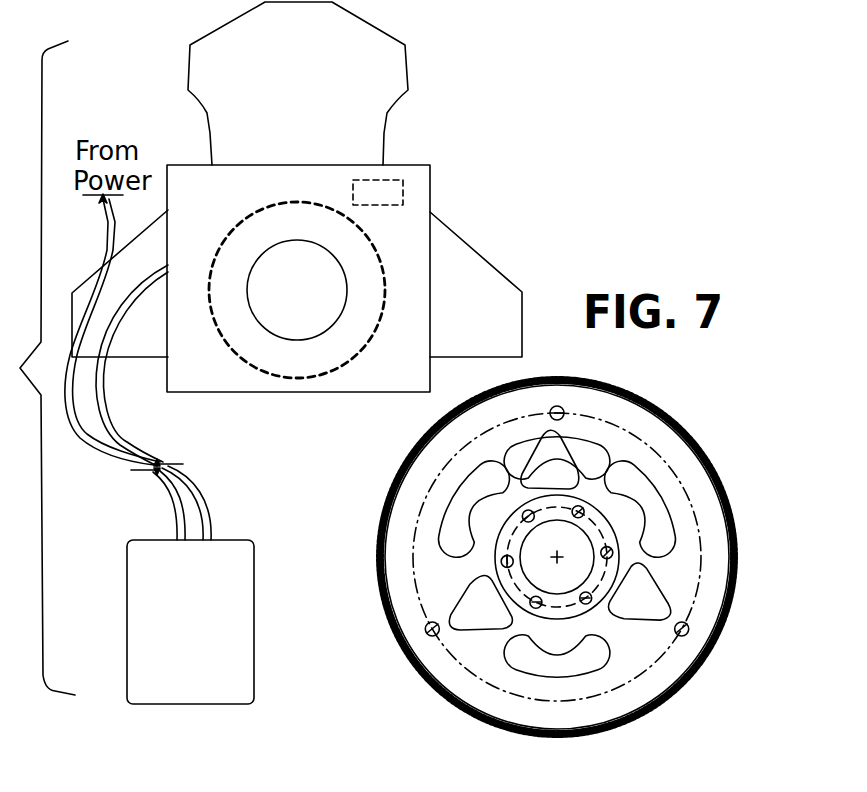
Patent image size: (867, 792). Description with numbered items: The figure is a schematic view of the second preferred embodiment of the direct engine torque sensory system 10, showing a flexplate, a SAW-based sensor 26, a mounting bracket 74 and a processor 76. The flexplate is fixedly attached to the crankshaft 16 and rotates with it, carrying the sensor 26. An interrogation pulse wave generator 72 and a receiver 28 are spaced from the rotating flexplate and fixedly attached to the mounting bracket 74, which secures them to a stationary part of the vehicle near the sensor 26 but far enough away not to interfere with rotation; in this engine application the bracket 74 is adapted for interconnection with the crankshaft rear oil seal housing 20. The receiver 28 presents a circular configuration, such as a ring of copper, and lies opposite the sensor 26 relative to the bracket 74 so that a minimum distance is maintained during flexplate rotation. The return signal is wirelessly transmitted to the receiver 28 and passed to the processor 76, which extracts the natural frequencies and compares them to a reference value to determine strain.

The direct engine torque sensory system 10 is at (617, 198).
The crankshaft 16 is at (313, 304).
The crankshaft rear oil seal housing 20 is at (313, 57).
The sensor 26 is at (492, 462).
The receiver 28 is at (293, 201).
The interrogation pulse wave generator 72 is at (403, 180).
The mounting bracket 74 is at (406, 376).
The processor 76 is at (213, 612).